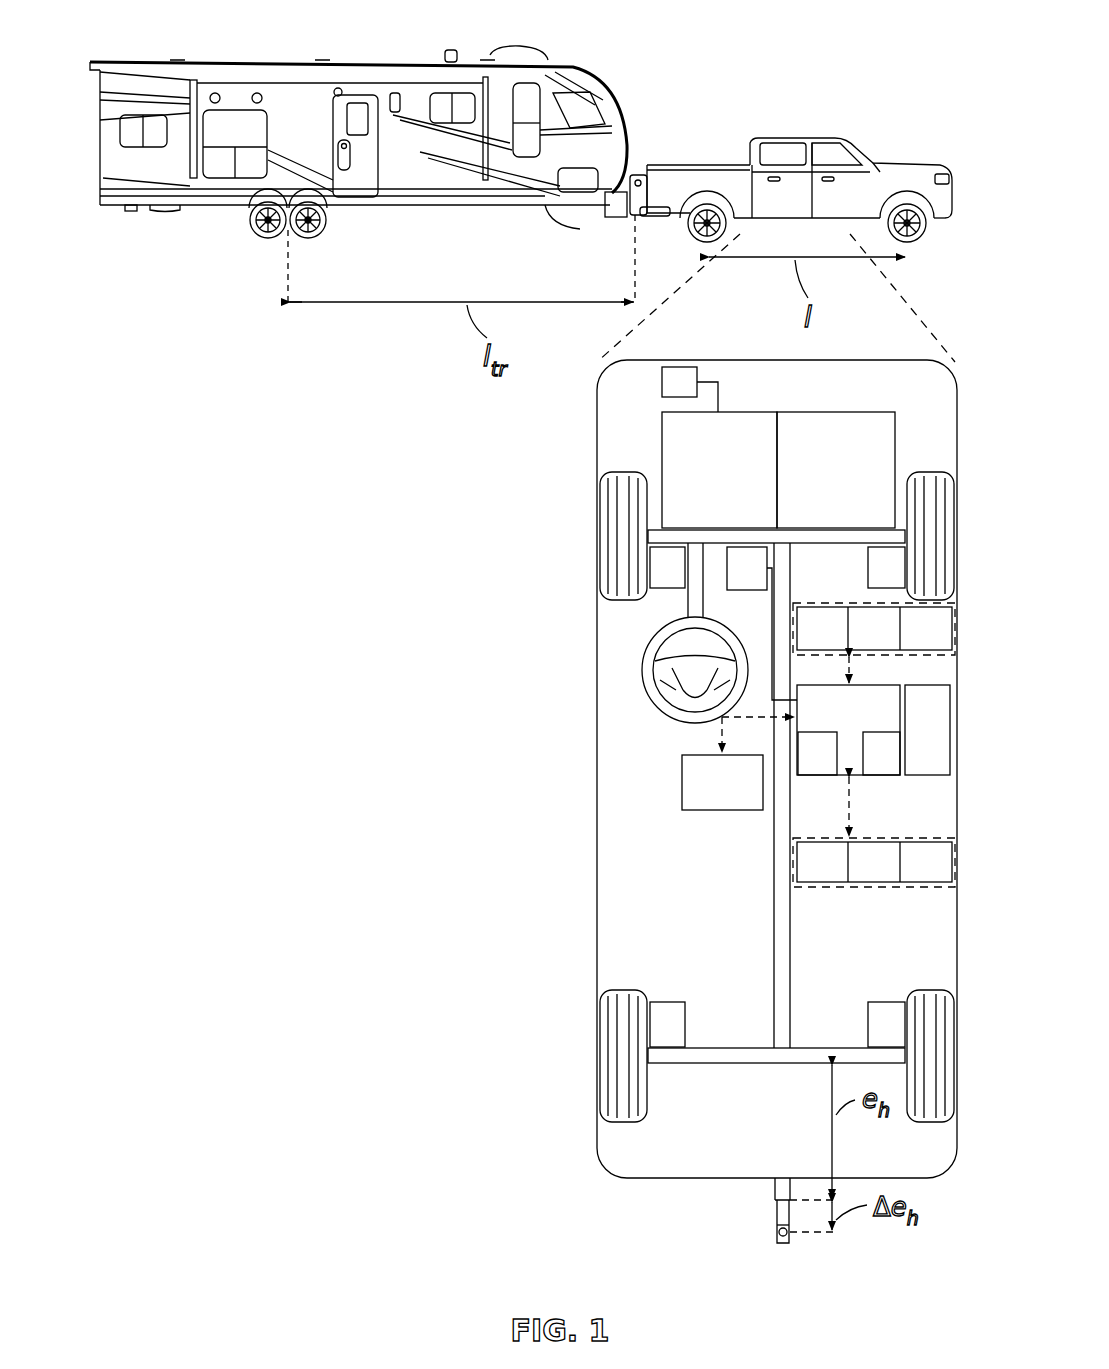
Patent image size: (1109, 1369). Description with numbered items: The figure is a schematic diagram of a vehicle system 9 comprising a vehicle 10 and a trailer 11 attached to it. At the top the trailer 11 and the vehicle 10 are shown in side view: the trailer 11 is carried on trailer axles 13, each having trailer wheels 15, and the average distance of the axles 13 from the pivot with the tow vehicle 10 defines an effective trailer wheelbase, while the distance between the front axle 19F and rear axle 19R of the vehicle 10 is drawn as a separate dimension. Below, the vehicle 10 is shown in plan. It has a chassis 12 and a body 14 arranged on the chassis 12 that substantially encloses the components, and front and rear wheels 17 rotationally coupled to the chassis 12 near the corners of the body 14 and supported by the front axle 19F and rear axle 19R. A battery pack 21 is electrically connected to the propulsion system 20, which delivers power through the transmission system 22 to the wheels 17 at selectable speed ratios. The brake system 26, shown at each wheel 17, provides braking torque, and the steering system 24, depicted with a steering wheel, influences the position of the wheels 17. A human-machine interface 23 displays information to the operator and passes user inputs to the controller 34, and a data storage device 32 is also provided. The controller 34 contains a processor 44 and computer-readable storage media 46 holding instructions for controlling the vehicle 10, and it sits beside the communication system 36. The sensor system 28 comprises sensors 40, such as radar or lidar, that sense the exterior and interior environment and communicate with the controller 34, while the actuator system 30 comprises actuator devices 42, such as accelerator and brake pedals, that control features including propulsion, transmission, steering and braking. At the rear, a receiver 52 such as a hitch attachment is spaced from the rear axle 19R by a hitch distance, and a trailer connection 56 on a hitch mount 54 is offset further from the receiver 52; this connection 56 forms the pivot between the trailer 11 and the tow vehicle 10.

The vehicle system 9 is at (600, 31).
The vehicle 10 is at (905, 157).
The trailer 11 is at (185, 62).
The chassis 12 is at (774, 955).
The trailer axle 13 is at (252, 228).
The body 14 is at (597, 868).
The trailer wheels 15 is at (261, 240).
The front and rear wheels 17 is at (623, 470).
The front axle 19F is at (742, 535).
The rear axle 19R is at (777, 1064).
The propulsion system 20 is at (705, 480).
The battery pack 21 is at (680, 366).
The transmission system 22 is at (822, 480).
The human-machine interface 23 is at (734, 582).
The steering system 24 is at (710, 592).
The brake system 26 is at (654, 582).
The sensor system 28 is at (865, 603).
The actuator system 30 is at (892, 889).
The data storage device 32 is at (738, 763).
The controller 34 is at (835, 724).
The communication system 36 is at (913, 744).
The sensors 40 is at (809, 642).
The actuator devices 42 is at (809, 876).
The processor 44 is at (804, 769).
The computer-readable storage device or media 46 is at (868, 769).
The receiver 52 is at (775, 1186).
The hitch mount 54 is at (777, 1215).
The trailer connection 56 is at (778, 1234).